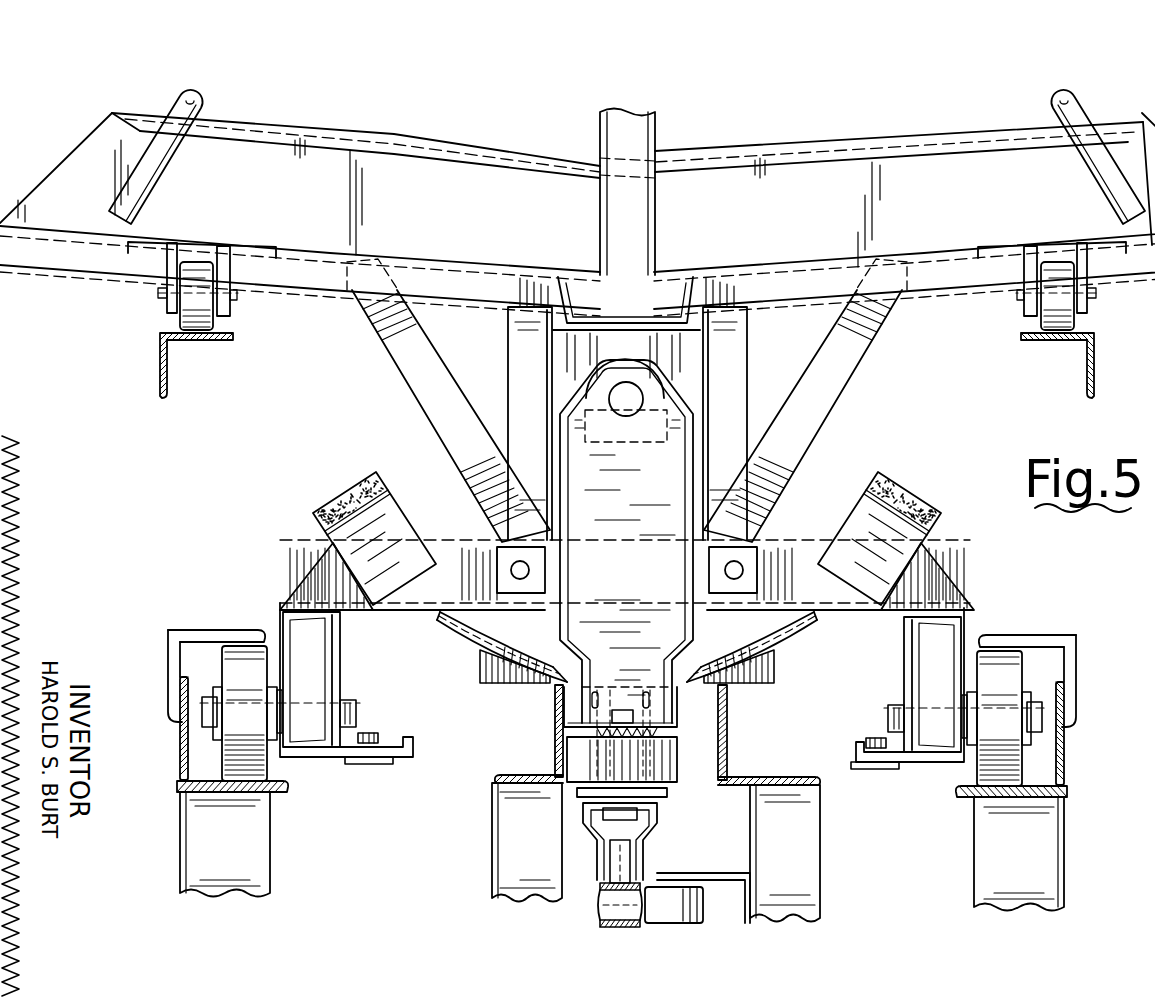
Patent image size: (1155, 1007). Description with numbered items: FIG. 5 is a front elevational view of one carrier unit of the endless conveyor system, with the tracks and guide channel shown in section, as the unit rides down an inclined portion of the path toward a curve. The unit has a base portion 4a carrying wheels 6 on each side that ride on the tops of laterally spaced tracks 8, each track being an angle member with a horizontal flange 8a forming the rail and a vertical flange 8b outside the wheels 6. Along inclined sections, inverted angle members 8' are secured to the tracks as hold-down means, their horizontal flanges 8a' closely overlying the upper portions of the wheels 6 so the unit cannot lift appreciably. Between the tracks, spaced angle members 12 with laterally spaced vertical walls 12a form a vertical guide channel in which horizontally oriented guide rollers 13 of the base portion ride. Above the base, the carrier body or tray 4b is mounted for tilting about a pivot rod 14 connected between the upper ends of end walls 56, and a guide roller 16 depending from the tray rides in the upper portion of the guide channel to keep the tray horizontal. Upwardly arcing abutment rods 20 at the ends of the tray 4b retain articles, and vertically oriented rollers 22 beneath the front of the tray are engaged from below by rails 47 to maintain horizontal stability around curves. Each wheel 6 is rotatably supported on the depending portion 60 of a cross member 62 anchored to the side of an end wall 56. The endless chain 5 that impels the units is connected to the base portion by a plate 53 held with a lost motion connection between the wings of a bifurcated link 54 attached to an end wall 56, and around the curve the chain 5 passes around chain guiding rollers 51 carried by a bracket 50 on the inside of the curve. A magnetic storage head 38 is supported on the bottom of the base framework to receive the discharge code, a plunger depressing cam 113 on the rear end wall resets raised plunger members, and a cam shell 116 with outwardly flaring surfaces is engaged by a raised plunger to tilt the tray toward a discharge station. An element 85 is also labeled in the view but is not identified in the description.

The base portion 4a is at (450, 538).
The carrier body or tray 4b is at (65, 145).
The endless chain 5 is at (658, 833).
The wheels 6 is at (236, 655).
The tracks or rails 8 is at (620, 800).
The inverted angle members 8' is at (622, 664).
The horizontal flange 8a is at (622, 851).
The horizontal flange 8a' is at (641, 602).
The vertical flange 8b is at (180, 745).
The angle members 12 is at (494, 779).
The vertical flanges or walls 12a is at (555, 709).
The guide rollers 13 is at (578, 762).
The pivot rod 14 is at (622, 413).
The guide roller or wheel 16 is at (680, 730).
The abutment rods 20 is at (173, 158).
The vertically oriented rollers 22 is at (180, 320).
The magnetic storage head 38 is at (352, 766).
The rails 47 is at (200, 341).
The bracket 50 is at (748, 876).
The chain guiding rollers 51 is at (690, 893).
The plate 53 is at (615, 873).
The bifurcated link 54 is at (595, 840).
The end wall 56 is at (677, 455).
The depending portion 60 is at (283, 618).
The cross member 62 is at (312, 572).
The cushion pad 85 is at (346, 493).
The plunger depressing cam 113 is at (488, 672).
The cam shell 116 is at (460, 642).